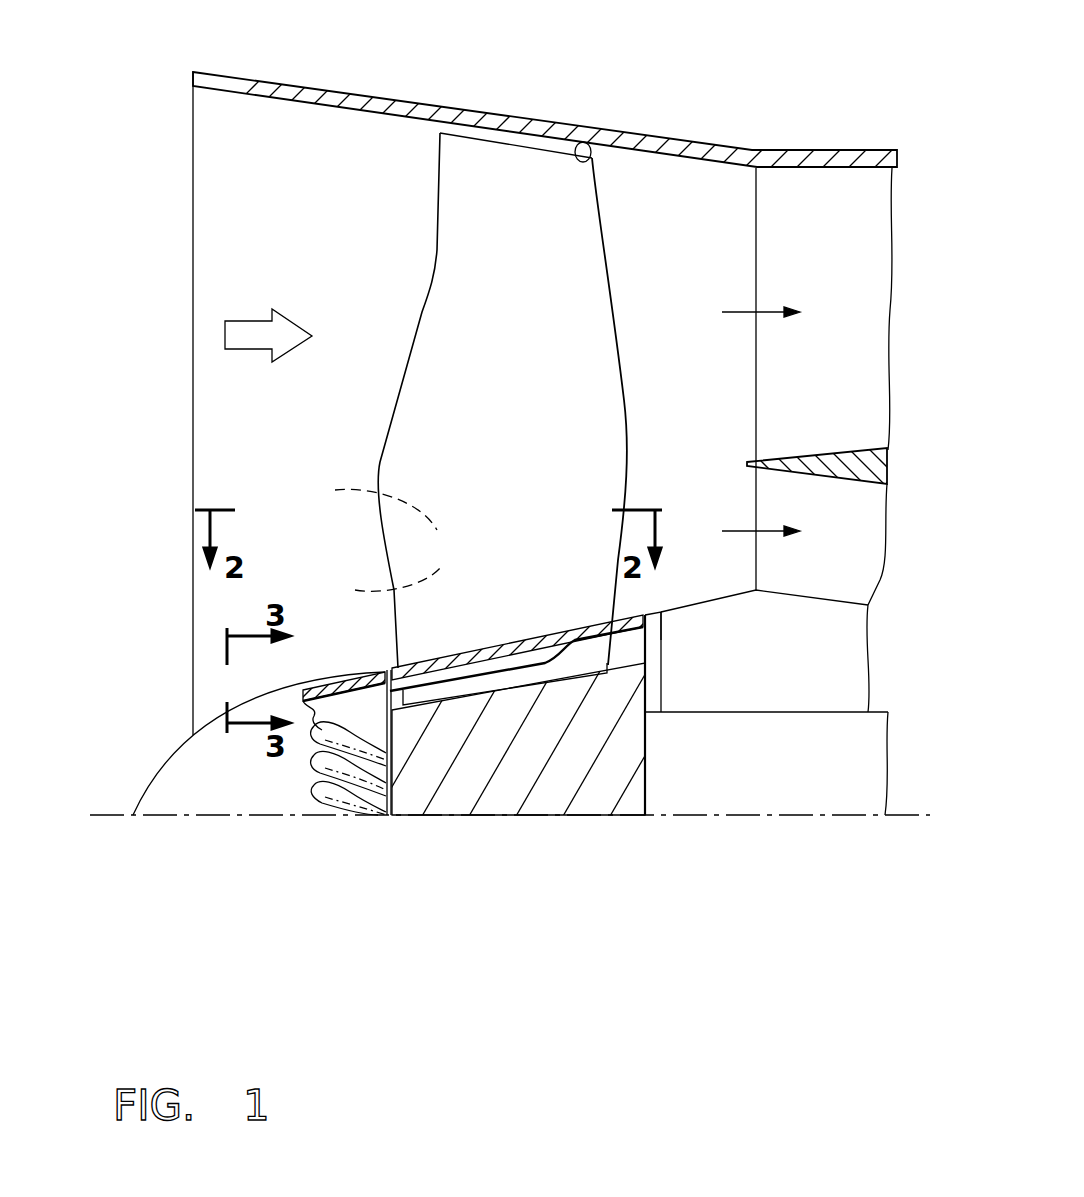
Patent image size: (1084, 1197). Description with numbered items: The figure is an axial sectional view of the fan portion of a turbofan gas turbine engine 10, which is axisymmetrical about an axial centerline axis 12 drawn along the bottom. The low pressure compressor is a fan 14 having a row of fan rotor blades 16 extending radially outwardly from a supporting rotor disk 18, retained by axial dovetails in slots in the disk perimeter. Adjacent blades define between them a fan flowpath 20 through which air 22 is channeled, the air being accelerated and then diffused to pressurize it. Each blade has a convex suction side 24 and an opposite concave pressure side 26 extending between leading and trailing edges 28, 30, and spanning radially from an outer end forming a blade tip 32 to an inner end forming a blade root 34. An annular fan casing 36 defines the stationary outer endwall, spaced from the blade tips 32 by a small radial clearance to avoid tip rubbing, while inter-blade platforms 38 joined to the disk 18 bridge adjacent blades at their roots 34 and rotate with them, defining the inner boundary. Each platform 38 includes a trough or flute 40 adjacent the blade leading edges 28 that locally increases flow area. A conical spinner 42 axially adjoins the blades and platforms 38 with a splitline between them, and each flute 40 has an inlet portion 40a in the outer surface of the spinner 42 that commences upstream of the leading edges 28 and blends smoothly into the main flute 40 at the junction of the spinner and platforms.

The turbofan gas turbine engine 10 is at (834, 146).
The axial centerline axis 12 is at (770, 818).
The fan 14 is at (645, 72).
The fan rotor blade 16 is at (502, 394).
The rotor disk 18 is at (537, 767).
The fan flowpath 20 is at (516, 394).
The air 22 is at (250, 320).
The suction side 24 is at (381, 585).
The pressure side 26 is at (366, 506).
The leading edge 28 is at (412, 338).
The trailing edge 30 is at (621, 330).
The blade tip 32 is at (500, 140).
The blade root 34 is at (516, 640).
The fan casing 36 is at (583, 155).
The inter-blade platform 38 is at (640, 620).
The flute 40 is at (447, 655).
The flute inlet portion 40a is at (377, 680).
The conical spinner 42 is at (182, 748).